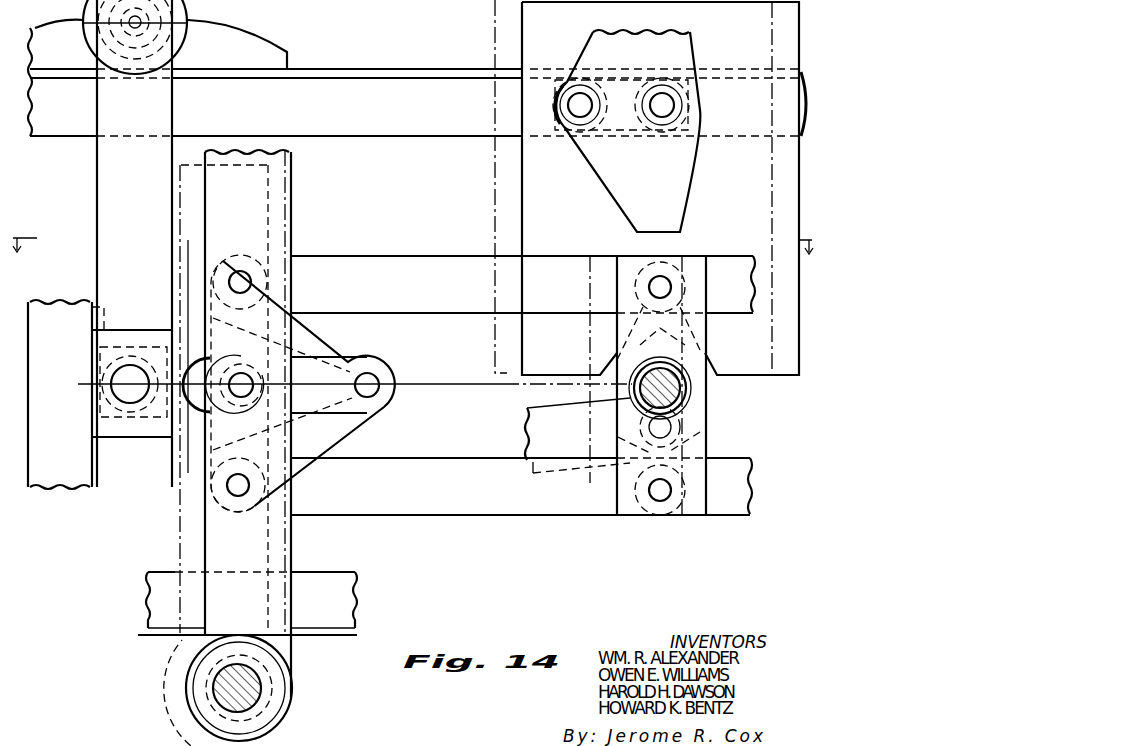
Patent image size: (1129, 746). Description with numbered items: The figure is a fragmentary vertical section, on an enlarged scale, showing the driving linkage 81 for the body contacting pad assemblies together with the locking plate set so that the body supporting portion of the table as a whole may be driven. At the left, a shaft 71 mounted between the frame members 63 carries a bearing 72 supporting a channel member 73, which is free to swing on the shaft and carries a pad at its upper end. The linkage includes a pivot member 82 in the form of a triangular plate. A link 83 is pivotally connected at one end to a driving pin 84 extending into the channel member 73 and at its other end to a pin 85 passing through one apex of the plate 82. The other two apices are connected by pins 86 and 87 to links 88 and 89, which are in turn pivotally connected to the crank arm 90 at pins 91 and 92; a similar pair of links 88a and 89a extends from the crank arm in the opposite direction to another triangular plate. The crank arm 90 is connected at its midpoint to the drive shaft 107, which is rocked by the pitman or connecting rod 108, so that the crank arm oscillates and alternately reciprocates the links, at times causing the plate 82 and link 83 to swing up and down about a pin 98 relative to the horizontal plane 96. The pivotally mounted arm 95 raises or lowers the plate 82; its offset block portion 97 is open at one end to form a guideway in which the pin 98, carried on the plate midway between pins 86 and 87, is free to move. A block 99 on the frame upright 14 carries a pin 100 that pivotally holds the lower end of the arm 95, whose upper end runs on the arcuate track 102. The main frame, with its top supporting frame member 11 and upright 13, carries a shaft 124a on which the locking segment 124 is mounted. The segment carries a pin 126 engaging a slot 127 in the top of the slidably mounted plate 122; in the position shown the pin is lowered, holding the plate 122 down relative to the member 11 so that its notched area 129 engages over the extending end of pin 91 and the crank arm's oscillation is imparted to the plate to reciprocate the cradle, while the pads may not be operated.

The top supporting frame member 11 is at (408, 137).
The upright 13 is at (417, 256).
The frame upright 14 is at (75, 490).
The frame member 63 is at (333, 641).
The shaft 71 is at (214, 697).
The bearing 72 is at (283, 715).
The channel member 73 is at (293, 541).
The linkage 81 is at (437, 528).
The pivot member 82 is at (352, 338).
The link 83 is at (323, 418).
The driving pin 84 is at (241, 396).
The pin 85 is at (385, 398).
The pin 86 is at (240, 290).
The pin 87 is at (246, 458).
The link 88 is at (486, 257).
The link 88a is at (733, 256).
The link 89 is at (498, 518).
The link 89a is at (716, 520).
The crank arm 90 is at (706, 448).
The pin 91 is at (632, 297).
The pin 92 is at (640, 518).
The pivotally mounted arm 95 is at (96, 176).
The horizontal plane 96 is at (450, 387).
The offset block portion 97 is at (268, 433).
The pin 98 is at (211, 413).
The block 99 is at (163, 421).
The pin 100 is at (105, 393).
The arcuate track 102 is at (233, 31).
The drive shaft 107 is at (706, 400).
The pitman or connecting rod 108 is at (527, 442).
The slidably mounted plate 122 is at (523, 237).
The locking segment 124 is at (693, 187).
The shaft 124a is at (676, 101).
The pin 126 is at (580, 84).
The slot 127 is at (560, 125).
The notched area 129 is at (712, 363).